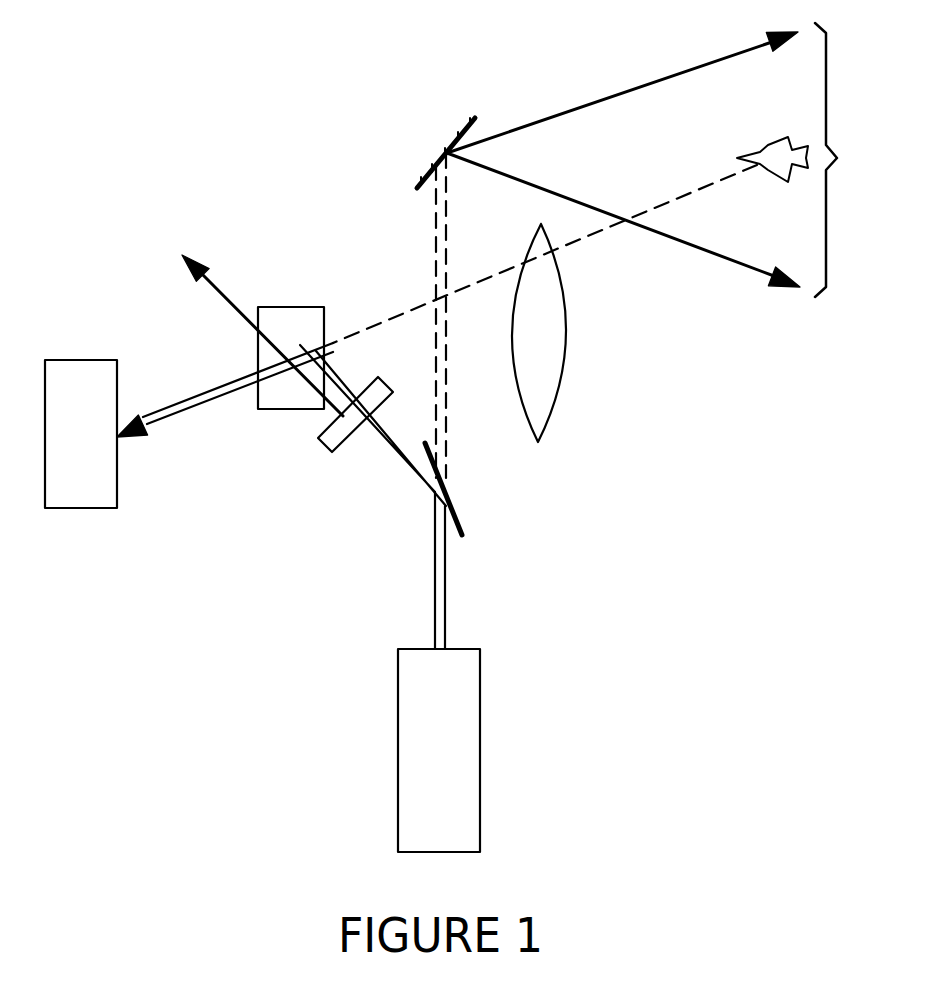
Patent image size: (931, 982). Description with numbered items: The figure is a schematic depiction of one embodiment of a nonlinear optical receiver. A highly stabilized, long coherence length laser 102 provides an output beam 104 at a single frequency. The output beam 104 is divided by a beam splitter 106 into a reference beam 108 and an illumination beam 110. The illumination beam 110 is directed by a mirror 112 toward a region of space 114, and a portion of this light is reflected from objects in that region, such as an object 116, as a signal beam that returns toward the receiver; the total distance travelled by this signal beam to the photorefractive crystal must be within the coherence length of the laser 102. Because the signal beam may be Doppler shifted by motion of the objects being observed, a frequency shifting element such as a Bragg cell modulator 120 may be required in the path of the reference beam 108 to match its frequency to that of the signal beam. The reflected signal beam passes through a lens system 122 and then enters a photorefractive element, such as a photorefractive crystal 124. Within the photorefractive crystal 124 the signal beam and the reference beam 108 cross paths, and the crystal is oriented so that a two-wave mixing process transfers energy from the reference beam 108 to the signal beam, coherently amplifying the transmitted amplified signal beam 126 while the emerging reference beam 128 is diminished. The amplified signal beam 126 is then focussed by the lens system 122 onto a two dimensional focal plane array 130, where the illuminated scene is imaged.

The laser 102 is at (480, 827).
The output beam 104 is at (445, 575).
The beam splitter 106 is at (457, 518).
The reference beam 108 is at (390, 456).
The illumination beam 110 is at (435, 262).
The mirror 112 is at (425, 172).
The region of space 114 is at (838, 158).
The object 116 is at (765, 152).
The Bragg cell modulator 120 is at (323, 448).
The lens system 122 is at (566, 335).
The photorefractive crystal 124 is at (289, 307).
The amplified signal beam 126 is at (203, 400).
The emerging reference beam 128 is at (226, 298).
The two dimensional focal plane array 130 is at (68, 510).